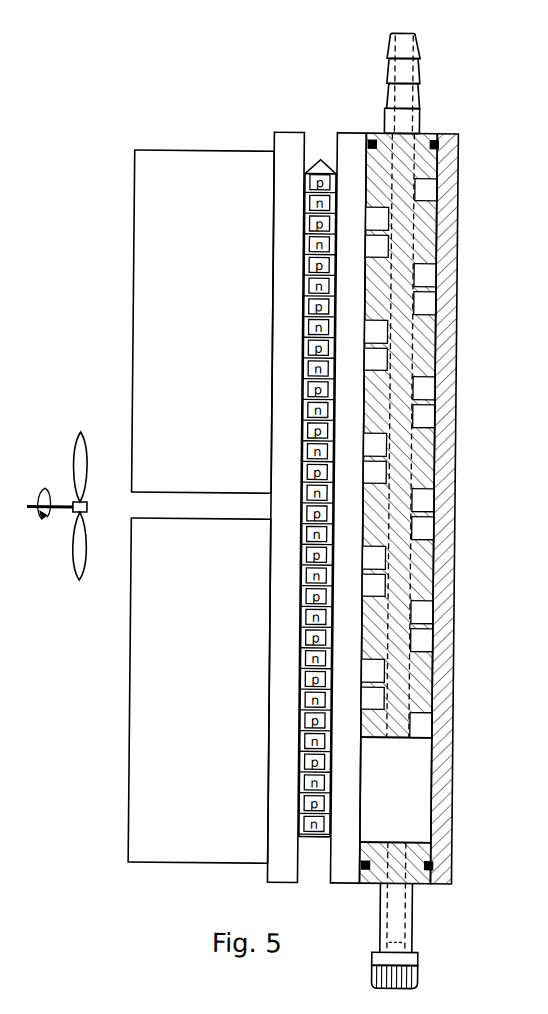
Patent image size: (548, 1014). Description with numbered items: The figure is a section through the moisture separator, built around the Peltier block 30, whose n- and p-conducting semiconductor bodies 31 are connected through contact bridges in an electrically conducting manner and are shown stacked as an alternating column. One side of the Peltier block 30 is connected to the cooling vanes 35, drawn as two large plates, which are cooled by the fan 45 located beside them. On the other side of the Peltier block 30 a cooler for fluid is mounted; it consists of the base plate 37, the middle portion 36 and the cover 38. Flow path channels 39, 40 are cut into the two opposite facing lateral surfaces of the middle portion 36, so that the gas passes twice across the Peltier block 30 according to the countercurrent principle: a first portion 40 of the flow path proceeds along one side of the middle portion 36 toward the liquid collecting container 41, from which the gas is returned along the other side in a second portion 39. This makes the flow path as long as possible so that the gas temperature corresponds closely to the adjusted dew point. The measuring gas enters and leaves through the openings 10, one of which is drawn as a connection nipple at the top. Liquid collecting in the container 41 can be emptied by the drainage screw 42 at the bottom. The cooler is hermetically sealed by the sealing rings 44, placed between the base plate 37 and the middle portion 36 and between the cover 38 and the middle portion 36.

The openings 10 is at (409, 68).
The Peltier block 30 is at (317, 489).
The n- and p-conducting semiconductor bodies 31 is at (313, 842).
The cooling vanes 35 is at (143, 295).
The middle portion 36 is at (414, 153).
The base plate 37 is at (349, 143).
The cover 38 is at (450, 185).
The flow path channel (second portion of flow path) 39 is at (379, 670).
The flow path channel (first portion of flow path) 40 is at (428, 613).
The liquid collecting container 41 is at (418, 773).
The drainage screw 42 is at (422, 968).
The sealing rings 44 is at (373, 882).
The fan 45 is at (75, 568).